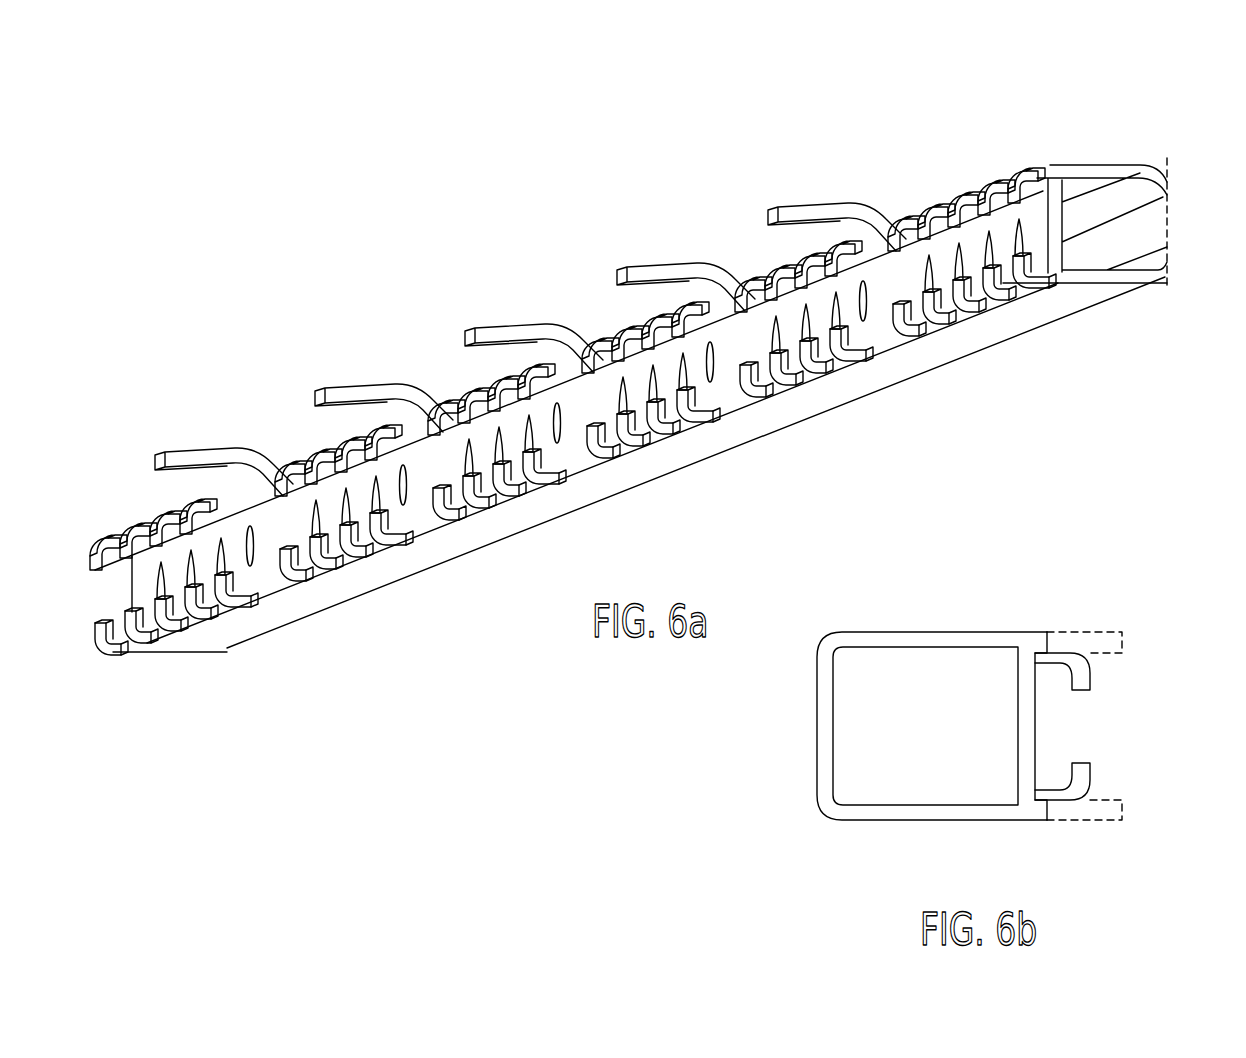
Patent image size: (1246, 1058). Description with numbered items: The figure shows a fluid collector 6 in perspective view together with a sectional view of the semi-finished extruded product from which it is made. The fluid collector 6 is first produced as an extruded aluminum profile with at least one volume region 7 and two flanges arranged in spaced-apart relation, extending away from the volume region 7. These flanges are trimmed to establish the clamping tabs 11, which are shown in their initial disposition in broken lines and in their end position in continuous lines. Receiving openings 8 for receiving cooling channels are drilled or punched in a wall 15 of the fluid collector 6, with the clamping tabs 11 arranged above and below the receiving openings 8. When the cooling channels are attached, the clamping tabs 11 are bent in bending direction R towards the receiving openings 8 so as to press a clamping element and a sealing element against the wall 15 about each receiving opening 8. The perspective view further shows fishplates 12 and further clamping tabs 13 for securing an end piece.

In FIG. 6a, the fluid collector 6 is at (1167, 128).
In FIG. 6b, the fluid collector 6 is at (768, 784).
In FIG. 6a, the volume region 7 is at (1116, 218).
In FIG. 6b, the volume region 7 is at (913, 690).
In FIG. 6a, the receiving opening 8 is at (640, 396).
In FIG. 6a, the clamping tab 11 is at (628, 328).
In FIG. 6b, the clamping tab 11 is at (1120, 630).
In FIG. 6a, the fishplate 12 is at (832, 205).
In FIG. 6a, the further clamping tab 13 is at (1042, 170).
In FIG. 6a, the wall 15 is at (652, 363).
In FIG. 6b, the wall 15 is at (1028, 733).
In FIG. 6b, the bending direction R is at (1096, 688).